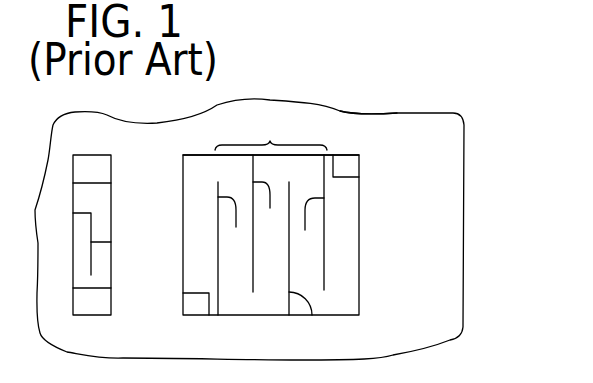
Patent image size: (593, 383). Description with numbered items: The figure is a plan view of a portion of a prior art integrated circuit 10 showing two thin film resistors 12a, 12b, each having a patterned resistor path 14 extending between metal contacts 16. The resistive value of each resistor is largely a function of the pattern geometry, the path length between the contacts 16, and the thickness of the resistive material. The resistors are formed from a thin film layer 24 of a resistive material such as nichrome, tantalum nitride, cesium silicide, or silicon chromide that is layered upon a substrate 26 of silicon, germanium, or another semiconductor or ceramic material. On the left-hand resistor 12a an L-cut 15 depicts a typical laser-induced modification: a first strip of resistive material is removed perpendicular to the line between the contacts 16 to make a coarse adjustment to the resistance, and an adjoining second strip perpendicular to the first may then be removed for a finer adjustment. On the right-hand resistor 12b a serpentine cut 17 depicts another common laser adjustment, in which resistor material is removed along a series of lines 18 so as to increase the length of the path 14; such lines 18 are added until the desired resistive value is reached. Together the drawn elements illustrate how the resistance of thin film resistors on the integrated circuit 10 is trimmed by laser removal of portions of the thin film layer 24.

The integrated circuit 10 is at (474, 138).
The resistor 12a is at (116, 181).
The resistor 12b is at (369, 196).
The patterned resistor path 14 is at (237, 168).
The L-cut 15 is at (112, 242).
The metal contacts 16 is at (91, 172).
The serpentine cut 17 is at (271, 129).
The lines 18 is at (315, 330).
The thin film layer 24 is at (345, 242).
The substrate 26 is at (349, 125).